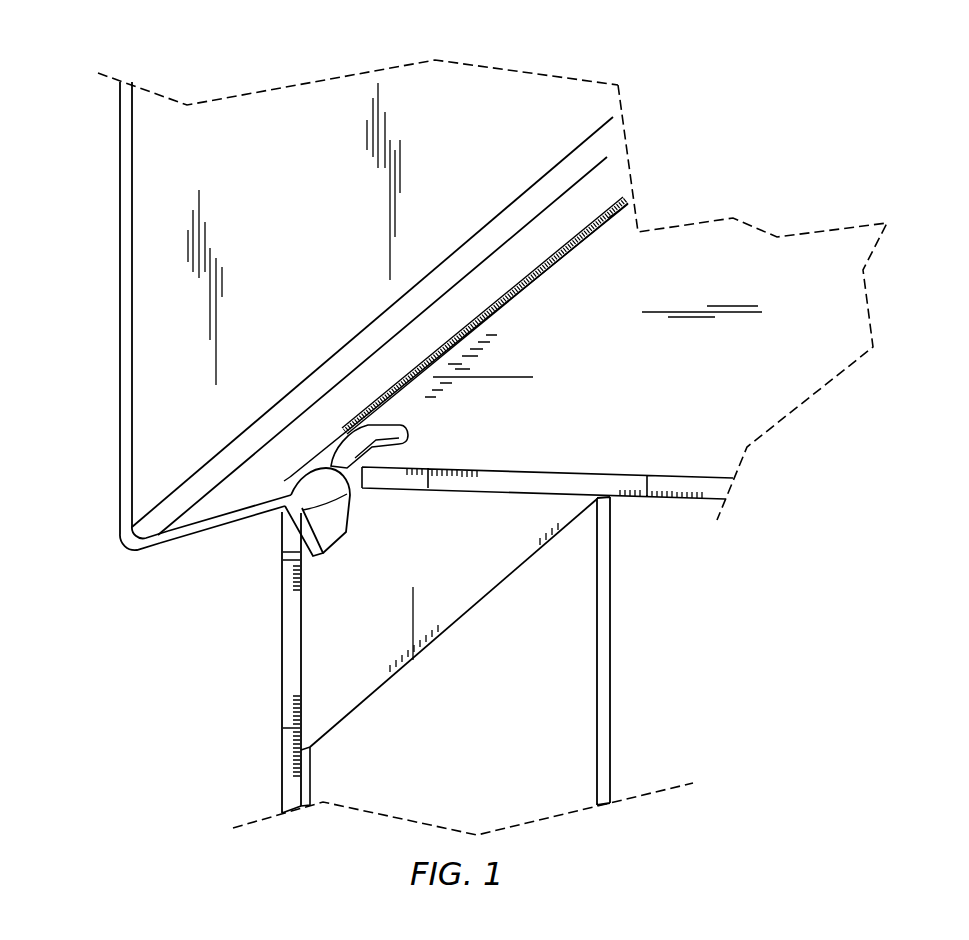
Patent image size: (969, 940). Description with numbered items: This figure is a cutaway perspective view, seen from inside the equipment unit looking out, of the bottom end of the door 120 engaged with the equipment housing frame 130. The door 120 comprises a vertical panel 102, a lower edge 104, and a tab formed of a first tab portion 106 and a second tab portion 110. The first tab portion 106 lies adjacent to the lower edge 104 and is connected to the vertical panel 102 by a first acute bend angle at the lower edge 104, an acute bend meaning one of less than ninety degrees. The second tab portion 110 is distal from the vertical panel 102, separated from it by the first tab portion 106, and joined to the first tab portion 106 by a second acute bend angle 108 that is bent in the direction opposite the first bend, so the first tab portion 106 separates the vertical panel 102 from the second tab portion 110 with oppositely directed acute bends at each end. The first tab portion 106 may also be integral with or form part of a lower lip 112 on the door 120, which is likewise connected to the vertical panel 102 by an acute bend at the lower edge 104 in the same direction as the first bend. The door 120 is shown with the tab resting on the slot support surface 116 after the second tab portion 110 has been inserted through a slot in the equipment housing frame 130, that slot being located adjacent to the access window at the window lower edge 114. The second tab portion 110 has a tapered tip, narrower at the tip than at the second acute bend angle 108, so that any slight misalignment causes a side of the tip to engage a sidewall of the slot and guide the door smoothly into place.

The vertical panel 102 is at (312, 254).
The lower edge 104 is at (135, 553).
The first tab portion 106 is at (224, 532).
The second acute bend angle 108 is at (345, 500).
The second tab portion 110 is at (333, 545).
The lower lip 112 is at (570, 207).
The window lower edge 114 is at (628, 204).
The slot support surface 116 is at (282, 548).
The door 120 is at (158, 331).
The equipment housing frame 130 is at (359, 664).